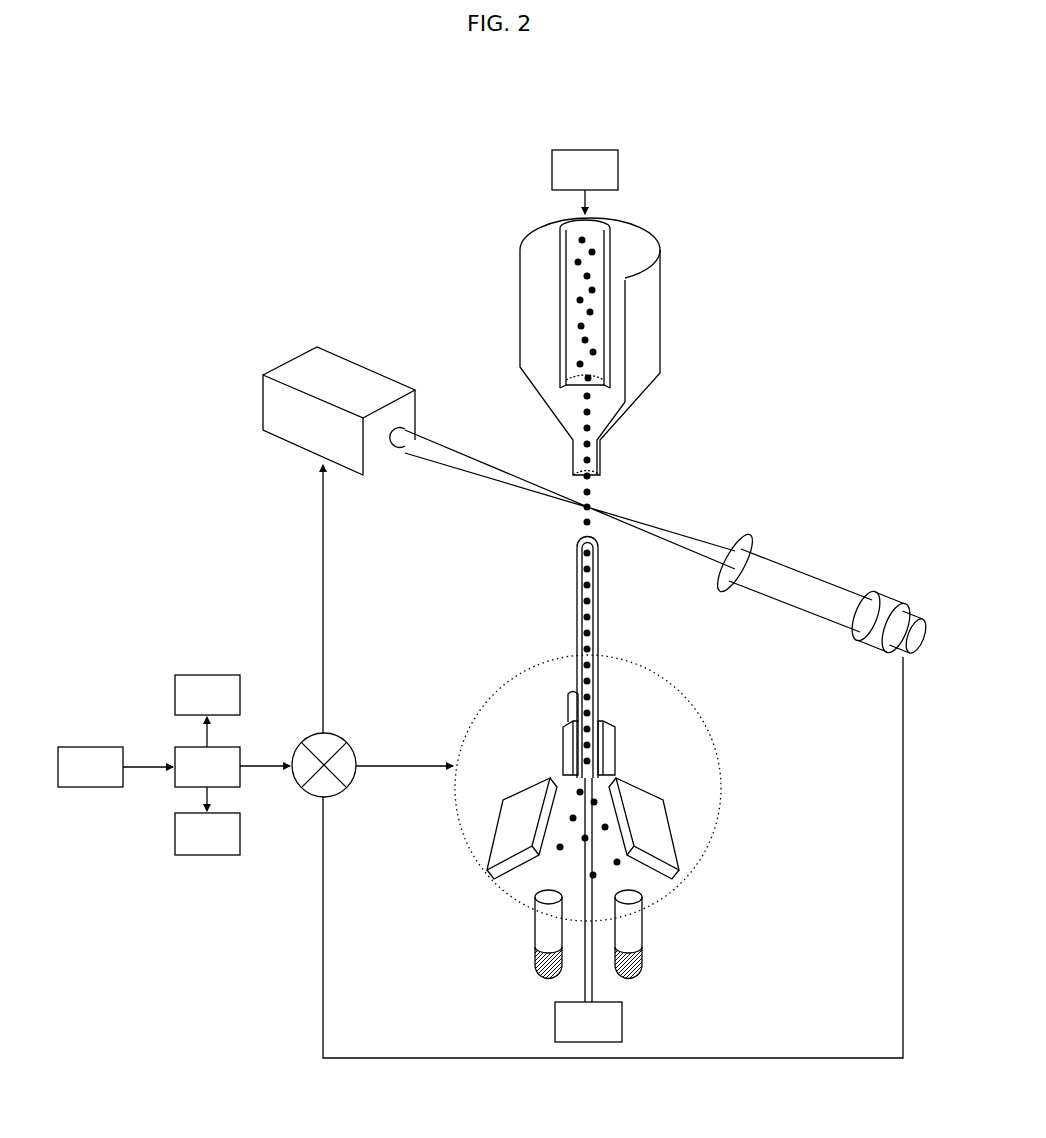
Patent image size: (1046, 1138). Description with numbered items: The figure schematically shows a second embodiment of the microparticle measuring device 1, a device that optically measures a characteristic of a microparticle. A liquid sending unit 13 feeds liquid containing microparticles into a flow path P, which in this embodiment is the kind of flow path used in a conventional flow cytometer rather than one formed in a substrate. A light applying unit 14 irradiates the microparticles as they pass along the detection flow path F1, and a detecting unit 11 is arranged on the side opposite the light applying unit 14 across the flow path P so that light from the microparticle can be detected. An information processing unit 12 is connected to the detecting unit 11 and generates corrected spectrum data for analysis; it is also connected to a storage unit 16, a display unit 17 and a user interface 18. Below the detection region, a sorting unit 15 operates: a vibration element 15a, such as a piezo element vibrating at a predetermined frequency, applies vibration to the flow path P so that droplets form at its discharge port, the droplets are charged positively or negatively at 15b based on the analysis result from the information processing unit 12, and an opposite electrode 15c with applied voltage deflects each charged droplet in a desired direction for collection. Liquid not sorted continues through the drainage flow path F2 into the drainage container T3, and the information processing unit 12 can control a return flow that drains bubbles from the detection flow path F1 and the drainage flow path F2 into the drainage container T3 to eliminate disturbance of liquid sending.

The microparticle measuring device 1 is at (873, 213).
The detecting unit 11 is at (355, 380).
The information processing unit 12 is at (314, 631).
The liquid sending unit 13 is at (590, 315).
The light applying unit 14 is at (913, 617).
The sorting unit 15 is at (703, 745).
The vibration element 15a is at (568, 700).
The droplet charging 15b is at (563, 750).
The opposite electrode 15c is at (662, 828).
The storage unit 16 is at (207, 821).
The display unit 17 is at (207, 711).
The user interface 18 is at (115, 767).
The flow path P is at (578, 598).
The detection flow path F1 is at (598, 655).
The drainage flow path F2 is at (565, 882).
The drainage container T3 is at (588, 1022).